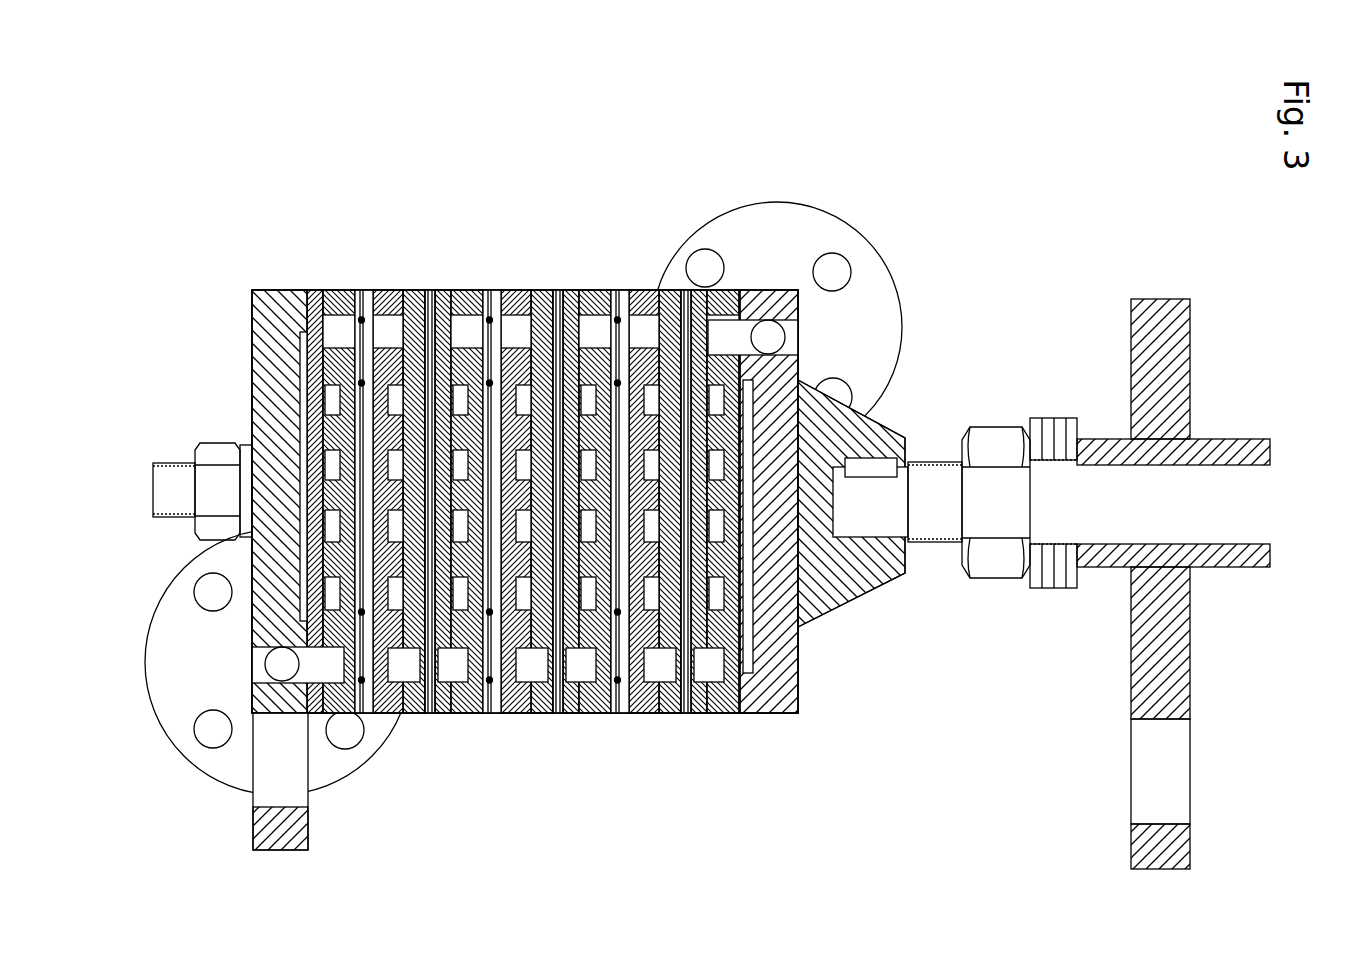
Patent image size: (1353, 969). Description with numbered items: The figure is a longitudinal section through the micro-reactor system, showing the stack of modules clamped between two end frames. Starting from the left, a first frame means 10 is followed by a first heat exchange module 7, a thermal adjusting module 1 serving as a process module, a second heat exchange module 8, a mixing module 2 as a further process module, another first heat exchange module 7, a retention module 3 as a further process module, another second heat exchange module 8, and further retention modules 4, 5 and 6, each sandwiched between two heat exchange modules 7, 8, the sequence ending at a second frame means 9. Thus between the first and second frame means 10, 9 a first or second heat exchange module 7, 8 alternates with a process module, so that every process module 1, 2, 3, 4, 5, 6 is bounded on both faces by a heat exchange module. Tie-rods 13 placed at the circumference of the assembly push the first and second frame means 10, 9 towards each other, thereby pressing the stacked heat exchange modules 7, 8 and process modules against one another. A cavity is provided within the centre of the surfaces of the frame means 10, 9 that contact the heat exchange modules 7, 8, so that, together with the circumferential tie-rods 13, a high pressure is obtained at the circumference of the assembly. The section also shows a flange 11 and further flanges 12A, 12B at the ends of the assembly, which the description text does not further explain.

The thermal adjusting module 1 is at (373, 713).
The mixing module 2 is at (430, 713).
The retention module 3 is at (497, 713).
The retention module 4 is at (560, 713).
The retention module 5 is at (623, 713).
The retention module 6 is at (688, 713).
The first heat exchange module 7 is at (329, 290).
The second heat exchange module 8 is at (393, 290).
The second frame means 9 is at (778, 713).
The first frame means 10 is at (268, 288).
The flange 11 is at (1152, 318).
The flange 12A is at (215, 762).
The flange 12B is at (877, 297).
The tie-rod 13 is at (172, 478).